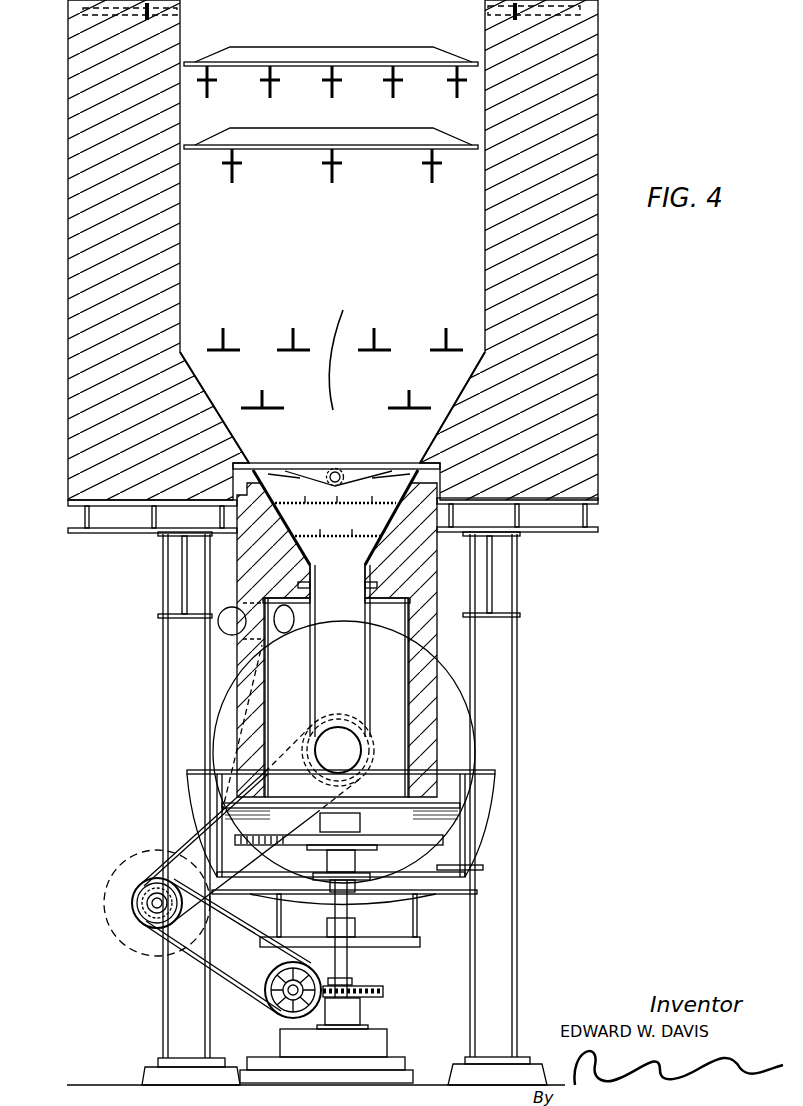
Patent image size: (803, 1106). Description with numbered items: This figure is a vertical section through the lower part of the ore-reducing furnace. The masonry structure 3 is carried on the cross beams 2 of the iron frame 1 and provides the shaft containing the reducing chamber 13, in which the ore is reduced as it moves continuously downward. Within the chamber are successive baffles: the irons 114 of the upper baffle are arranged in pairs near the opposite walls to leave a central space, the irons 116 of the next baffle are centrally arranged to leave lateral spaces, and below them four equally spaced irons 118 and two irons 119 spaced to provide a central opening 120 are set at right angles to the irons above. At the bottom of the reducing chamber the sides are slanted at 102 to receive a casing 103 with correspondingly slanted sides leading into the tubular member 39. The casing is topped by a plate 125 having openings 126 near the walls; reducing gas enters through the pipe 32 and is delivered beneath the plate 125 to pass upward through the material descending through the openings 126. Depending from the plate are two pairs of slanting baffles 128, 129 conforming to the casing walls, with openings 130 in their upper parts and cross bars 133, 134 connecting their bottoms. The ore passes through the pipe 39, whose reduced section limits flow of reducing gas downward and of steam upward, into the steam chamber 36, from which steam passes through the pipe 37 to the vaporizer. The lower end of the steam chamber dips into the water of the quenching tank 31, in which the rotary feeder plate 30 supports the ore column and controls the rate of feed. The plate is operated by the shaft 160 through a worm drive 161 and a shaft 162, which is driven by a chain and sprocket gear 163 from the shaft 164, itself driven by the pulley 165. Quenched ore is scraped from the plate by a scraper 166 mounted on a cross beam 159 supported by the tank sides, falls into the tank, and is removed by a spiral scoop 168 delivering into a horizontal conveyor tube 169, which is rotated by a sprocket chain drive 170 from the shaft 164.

The iron frame 1 is at (502, 675).
The cross beams 2 is at (595, 517).
The masonry structure 3 is at (587, 77).
The reducing chamber 13 is at (193, 232).
The feeder plate 30 is at (465, 837).
The quenching tank 31 is at (463, 862).
The pipe 32 is at (340, 473).
The steam chamber 36 is at (283, 715).
The pipe 37 is at (227, 623).
The tubular member 39 is at (323, 683).
The slanted sides 102 is at (213, 420).
The casing 103 is at (270, 522).
The irons 114 is at (355, 50).
The irons 116 is at (357, 133).
The irons 118 is at (223, 328).
The irons 119 is at (262, 392).
The central opening 120 is at (347, 353).
The plate 125 is at (335, 463).
The openings 126 is at (260, 463).
The slanting baffles 128 is at (294, 473).
The slanting baffles 129 is at (373, 517).
The openings 130 is at (385, 463).
The cross bars 133 is at (320, 505).
The cross bars 134 is at (327, 538).
The cross beam 159 is at (443, 803).
The shaft 160 is at (347, 963).
The worm drive 161 is at (383, 991).
The shaft 162 is at (285, 998).
The chain and sprocket gear 163 is at (150, 928).
The shaft 164 is at (155, 905).
The pulley 165 is at (106, 888).
The scraper 166 is at (360, 823).
The spiral scoop 168 is at (467, 707).
The horizontal conveyor tube 169 is at (323, 779).
The sprocket chain drive 170 is at (190, 840).